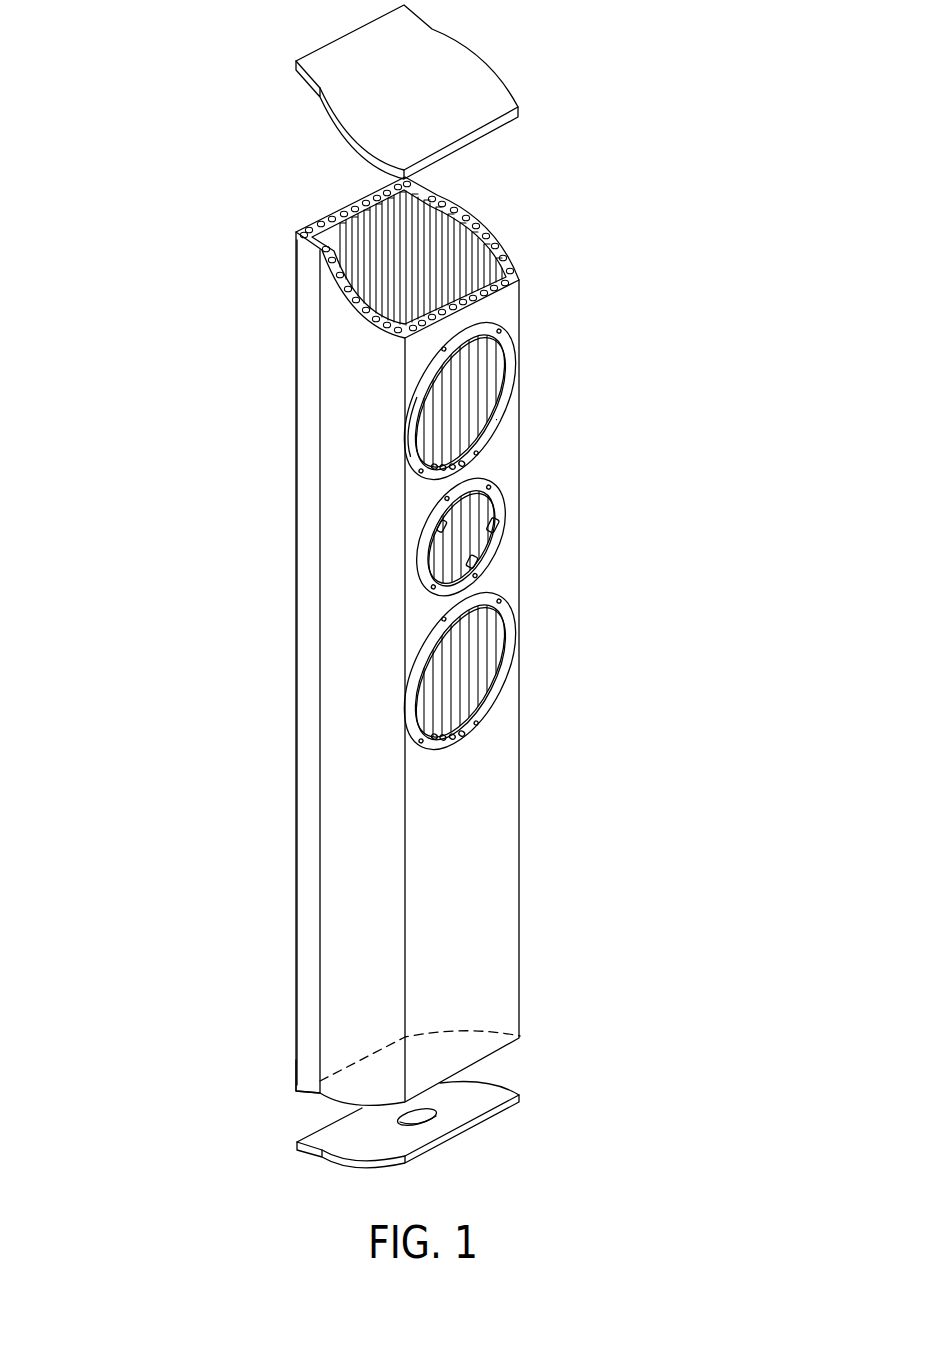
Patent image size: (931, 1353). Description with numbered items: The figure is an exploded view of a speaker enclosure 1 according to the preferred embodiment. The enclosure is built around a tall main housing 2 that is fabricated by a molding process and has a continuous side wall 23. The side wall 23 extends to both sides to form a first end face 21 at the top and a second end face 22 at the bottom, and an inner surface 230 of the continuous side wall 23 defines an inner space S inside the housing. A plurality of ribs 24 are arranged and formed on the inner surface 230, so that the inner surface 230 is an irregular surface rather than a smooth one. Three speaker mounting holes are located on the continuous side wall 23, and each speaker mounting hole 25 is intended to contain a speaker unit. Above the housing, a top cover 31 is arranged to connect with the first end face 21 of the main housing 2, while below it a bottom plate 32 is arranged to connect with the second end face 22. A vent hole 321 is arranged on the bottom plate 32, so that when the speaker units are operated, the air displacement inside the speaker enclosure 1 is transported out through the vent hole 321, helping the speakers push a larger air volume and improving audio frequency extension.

The speaker enclosure 1 is at (143, 116).
The main housing 2 is at (562, 523).
The first end face 21 is at (320, 224).
The second end face 22 is at (297, 1091).
The continuous side wall 23 is at (306, 549).
The ribs 24 is at (468, 366).
The speaker mounting hole 25 is at (500, 670).
The inner surface 230 is at (427, 222).
The inner space S is at (413, 262).
The top cover 31 is at (490, 77).
The bottom plate 32 is at (480, 1120).
The vent hole 321 is at (405, 1124).